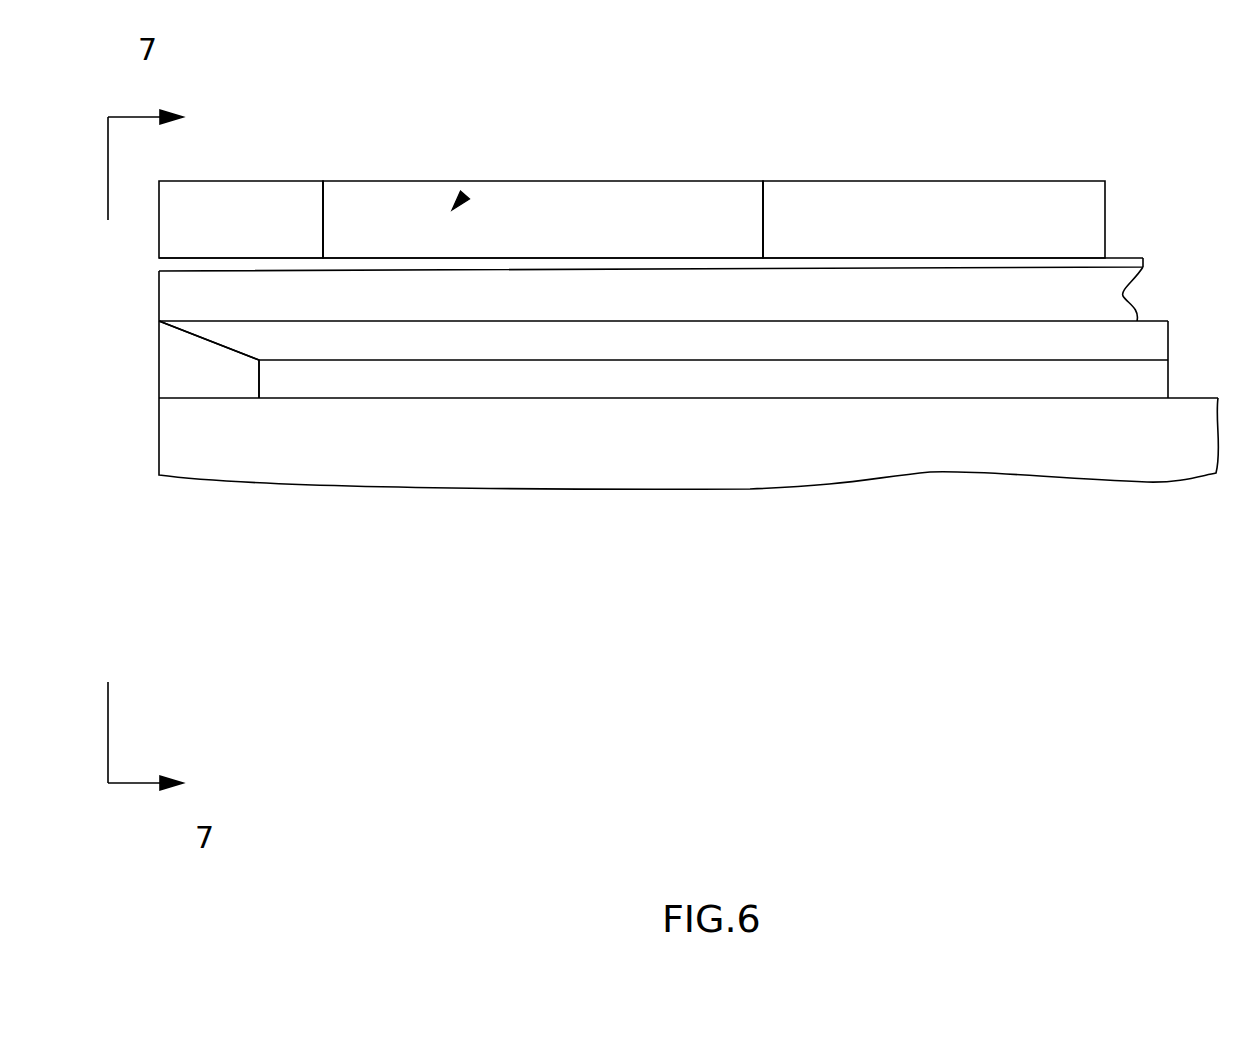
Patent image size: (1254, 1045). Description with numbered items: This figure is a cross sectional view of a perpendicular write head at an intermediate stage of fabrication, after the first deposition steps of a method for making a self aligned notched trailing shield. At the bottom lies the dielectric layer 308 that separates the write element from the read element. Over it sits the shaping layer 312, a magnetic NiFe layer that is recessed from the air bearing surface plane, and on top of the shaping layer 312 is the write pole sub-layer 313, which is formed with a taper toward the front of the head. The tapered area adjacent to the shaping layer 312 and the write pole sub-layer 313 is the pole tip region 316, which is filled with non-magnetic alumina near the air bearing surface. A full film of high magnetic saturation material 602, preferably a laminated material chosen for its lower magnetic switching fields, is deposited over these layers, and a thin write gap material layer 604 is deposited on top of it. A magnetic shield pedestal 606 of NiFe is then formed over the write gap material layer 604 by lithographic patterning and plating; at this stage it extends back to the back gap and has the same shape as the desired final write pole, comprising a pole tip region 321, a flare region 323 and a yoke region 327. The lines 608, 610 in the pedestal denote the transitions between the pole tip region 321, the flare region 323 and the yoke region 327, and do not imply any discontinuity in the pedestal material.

The dielectric layer 308 is at (1107, 448).
The shaping layer 312 is at (1140, 378).
The write pole sub-layer 313 is at (1137, 347).
The pole tip region 316 is at (183, 373).
The pole tip region 321 is at (235, 193).
The flare region 323 is at (638, 207).
The yoke region 327 is at (930, 218).
The high magnetic saturation material 602 is at (1123, 296).
The write gap material layer 604 is at (1143, 262).
The magnetic shield pedestal 606 is at (460, 200).
The transition line 608 is at (325, 220).
The transition line 610 is at (765, 200).